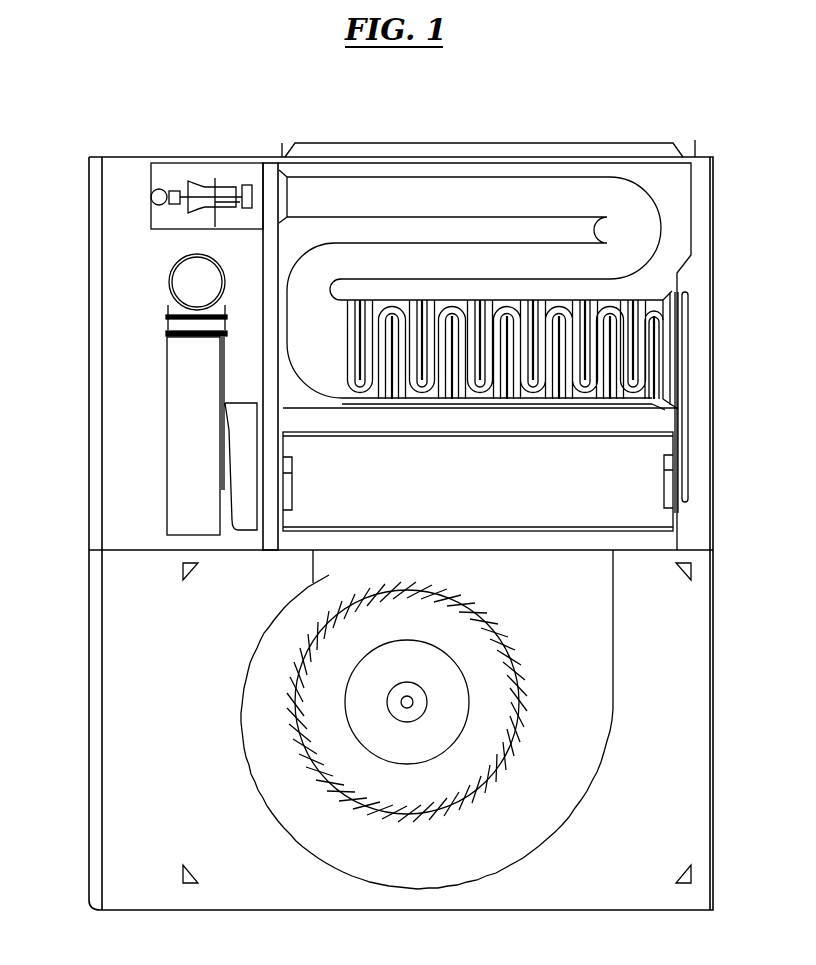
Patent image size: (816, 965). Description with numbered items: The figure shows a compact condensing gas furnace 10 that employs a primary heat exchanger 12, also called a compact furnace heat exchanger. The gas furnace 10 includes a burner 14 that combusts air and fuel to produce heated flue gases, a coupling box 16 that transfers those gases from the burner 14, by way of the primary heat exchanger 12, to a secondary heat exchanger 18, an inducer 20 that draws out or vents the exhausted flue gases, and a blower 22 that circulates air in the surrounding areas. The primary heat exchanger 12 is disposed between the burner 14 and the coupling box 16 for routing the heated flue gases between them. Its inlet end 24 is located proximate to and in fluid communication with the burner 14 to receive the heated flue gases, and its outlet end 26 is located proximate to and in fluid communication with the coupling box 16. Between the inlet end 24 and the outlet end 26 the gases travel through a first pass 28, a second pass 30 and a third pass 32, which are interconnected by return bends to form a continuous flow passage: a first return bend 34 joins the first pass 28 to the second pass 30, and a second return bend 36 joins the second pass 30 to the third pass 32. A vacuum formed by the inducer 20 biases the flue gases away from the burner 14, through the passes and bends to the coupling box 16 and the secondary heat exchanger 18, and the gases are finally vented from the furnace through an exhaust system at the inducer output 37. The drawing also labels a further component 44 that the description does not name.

The compact condensing gas furnace 10 is at (583, 83).
The primary heat exchanger 12 is at (360, 177).
The burner 14 is at (196, 170).
The coupling box 16 is at (688, 408).
The secondary heat exchanger 18 is at (638, 512).
The inducer 20 is at (203, 448).
The blower 22 is at (570, 630).
The inlet end 24 is at (288, 197).
The outlet end 26 is at (670, 325).
The first pass 28 is at (452, 196).
The second pass 30 is at (527, 263).
The third pass 32 is at (328, 343).
The first return bend 34 is at (648, 240).
The second return bend 36 is at (315, 273).
The inducer output 37 is at (192, 283).
The bottom plate 44 is at (493, 405).